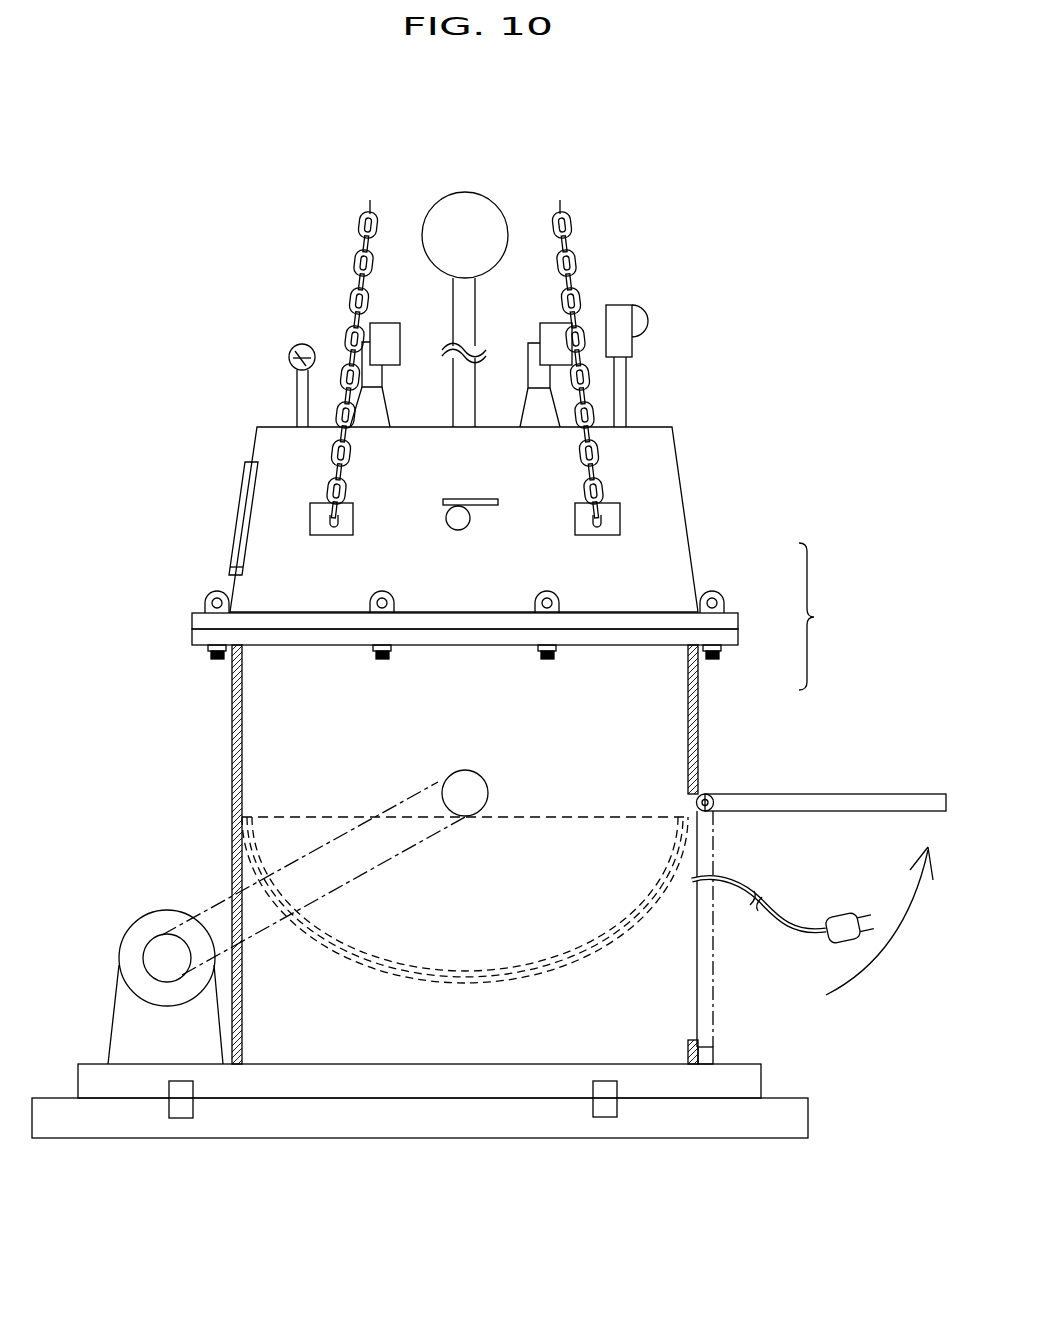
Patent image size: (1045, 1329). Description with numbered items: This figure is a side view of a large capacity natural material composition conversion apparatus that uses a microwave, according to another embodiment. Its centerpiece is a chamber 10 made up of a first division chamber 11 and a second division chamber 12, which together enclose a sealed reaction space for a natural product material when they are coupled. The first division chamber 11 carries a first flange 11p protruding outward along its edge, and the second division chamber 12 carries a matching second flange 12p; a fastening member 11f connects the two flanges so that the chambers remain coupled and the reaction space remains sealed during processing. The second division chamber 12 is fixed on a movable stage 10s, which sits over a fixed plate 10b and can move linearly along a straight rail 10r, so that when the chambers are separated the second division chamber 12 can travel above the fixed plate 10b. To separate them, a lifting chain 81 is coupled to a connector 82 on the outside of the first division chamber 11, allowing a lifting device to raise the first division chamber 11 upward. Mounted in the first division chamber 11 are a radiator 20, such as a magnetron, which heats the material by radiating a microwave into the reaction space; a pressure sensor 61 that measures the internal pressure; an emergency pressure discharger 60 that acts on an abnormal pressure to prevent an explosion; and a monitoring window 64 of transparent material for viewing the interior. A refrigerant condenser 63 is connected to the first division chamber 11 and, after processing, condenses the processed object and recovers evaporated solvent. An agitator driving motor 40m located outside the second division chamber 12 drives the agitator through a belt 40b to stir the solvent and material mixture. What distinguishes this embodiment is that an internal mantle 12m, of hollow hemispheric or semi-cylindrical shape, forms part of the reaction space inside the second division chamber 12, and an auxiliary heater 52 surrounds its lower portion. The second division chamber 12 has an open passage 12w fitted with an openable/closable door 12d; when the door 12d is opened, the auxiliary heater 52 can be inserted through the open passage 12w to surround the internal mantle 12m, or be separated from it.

The chamber 10 is at (537, 745).
The first division chamber 11 is at (663, 567).
The second division chamber 12 is at (700, 695).
The first flange 11p is at (192, 619).
The second flange 12p is at (192, 637).
The fastening member 11f is at (212, 660).
The openable/closable door 12d is at (880, 795).
The internal mantle 12m is at (471, 985).
The open passage 12w is at (693, 1050).
The movable stage 10s is at (740, 1068).
The fixed plate 10b is at (775, 1125).
The straight rail 10r is at (603, 1108).
The radiator 20 is at (385, 323).
The agitator driving motor 40m is at (135, 927).
The belt 40b is at (220, 900).
The auxiliary heater 52 is at (375, 975).
The emergency pressure discharger 60 is at (620, 305).
The pressure sensor 61 is at (297, 348).
The refrigerant condenser 63 is at (487, 195).
The monitoring window 64 is at (242, 513).
The lifting chain 81 is at (602, 460).
The connector 82 is at (602, 520).